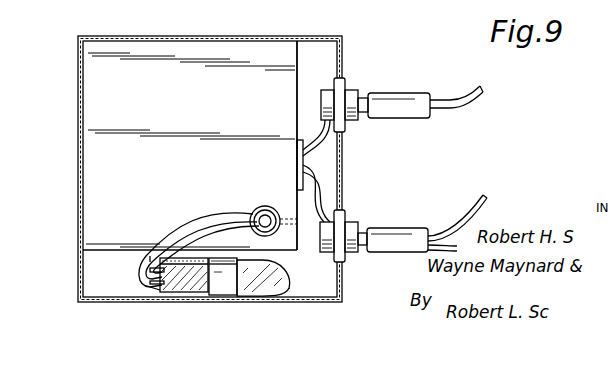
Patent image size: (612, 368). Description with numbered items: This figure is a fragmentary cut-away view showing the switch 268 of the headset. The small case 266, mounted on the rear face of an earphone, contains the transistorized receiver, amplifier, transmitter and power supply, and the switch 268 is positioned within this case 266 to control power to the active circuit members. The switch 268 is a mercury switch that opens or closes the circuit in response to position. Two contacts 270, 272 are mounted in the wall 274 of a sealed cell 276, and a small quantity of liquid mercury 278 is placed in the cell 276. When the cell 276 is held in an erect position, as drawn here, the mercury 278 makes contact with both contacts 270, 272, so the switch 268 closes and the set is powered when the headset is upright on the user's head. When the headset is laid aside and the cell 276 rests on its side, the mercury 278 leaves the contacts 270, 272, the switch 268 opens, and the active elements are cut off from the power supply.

The case 266 is at (282, 169).
The switch 268 is at (149, 275).
The contact 270 is at (151, 267).
The contact 272 is at (154, 286).
The wall 274 is at (253, 286).
The sealed cell 276 is at (293, 289).
The liquid mercury 278 is at (190, 284).